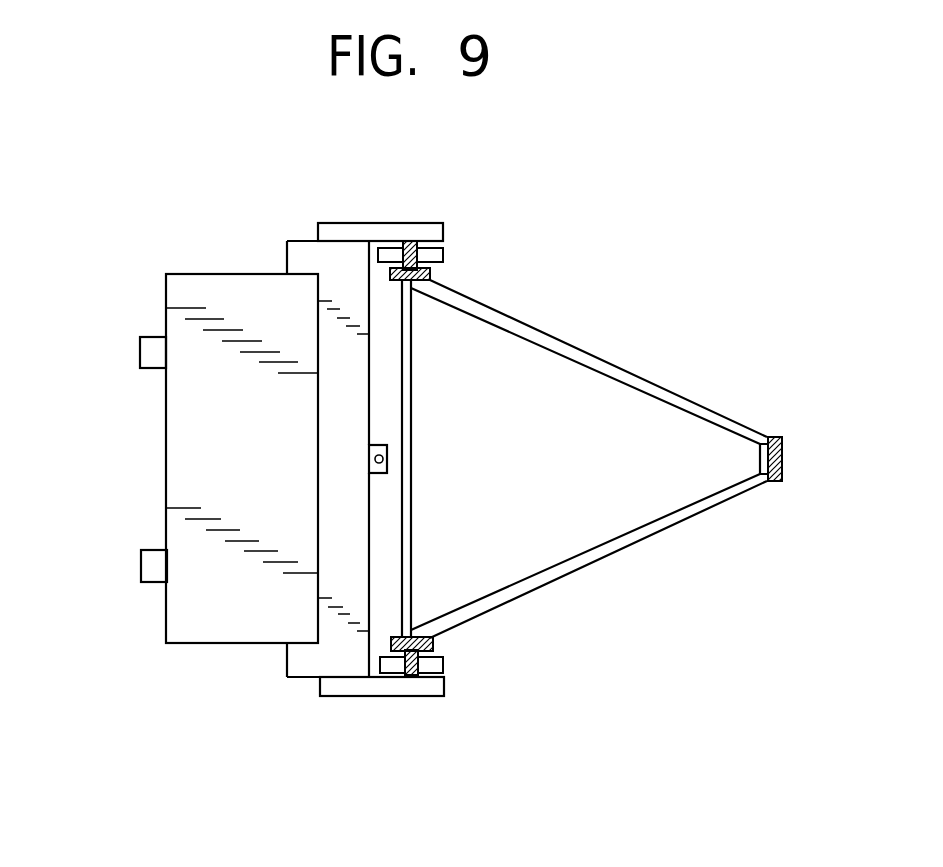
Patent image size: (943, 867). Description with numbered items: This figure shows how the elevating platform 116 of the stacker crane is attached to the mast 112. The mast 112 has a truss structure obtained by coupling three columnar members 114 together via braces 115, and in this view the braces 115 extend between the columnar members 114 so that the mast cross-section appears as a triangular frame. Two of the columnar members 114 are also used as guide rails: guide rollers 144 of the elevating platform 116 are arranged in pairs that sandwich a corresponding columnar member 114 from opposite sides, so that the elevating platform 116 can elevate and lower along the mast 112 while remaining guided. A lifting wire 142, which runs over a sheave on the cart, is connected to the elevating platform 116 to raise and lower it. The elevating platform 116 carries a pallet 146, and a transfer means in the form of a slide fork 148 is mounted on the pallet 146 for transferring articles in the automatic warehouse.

The mast 112 is at (713, 673).
The columnar members 114 is at (430, 275).
The braces 115 is at (410, 435).
The elevating platform 116 is at (340, 652).
The lifting wire 142 is at (387, 468).
The guide rollers 144 is at (390, 255).
The pallet 146 is at (145, 565).
The slide fork 148 is at (220, 615).